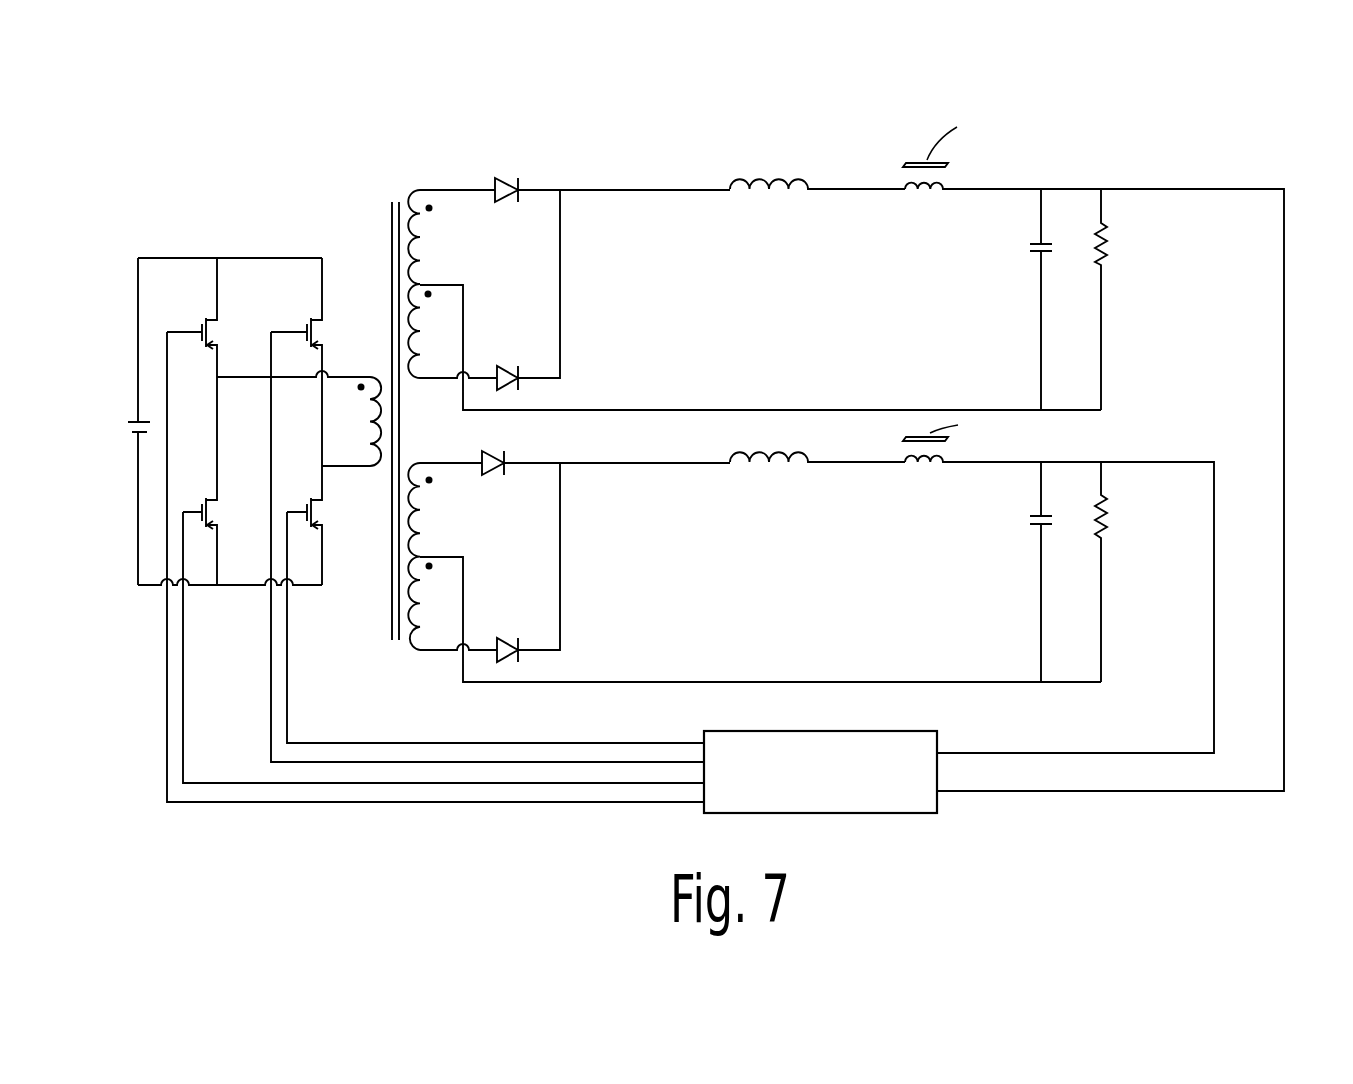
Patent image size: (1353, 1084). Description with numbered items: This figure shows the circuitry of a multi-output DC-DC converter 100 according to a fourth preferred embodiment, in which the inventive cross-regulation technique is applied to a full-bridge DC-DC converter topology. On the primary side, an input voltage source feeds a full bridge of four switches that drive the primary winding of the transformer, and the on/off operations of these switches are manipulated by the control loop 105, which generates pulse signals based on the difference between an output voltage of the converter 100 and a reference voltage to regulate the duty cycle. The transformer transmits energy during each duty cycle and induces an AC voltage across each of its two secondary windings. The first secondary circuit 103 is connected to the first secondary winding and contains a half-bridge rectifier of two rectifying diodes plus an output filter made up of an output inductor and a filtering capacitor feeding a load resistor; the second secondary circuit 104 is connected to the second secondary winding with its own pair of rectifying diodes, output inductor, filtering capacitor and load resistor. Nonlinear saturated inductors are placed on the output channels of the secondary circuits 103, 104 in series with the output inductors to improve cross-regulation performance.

The multi-output DC-DC converter 100 is at (1337, 140).
The first secondary circuit 103 is at (550, 180).
The second secondary circuit 104 is at (550, 452).
The control loop 105 is at (715, 743).